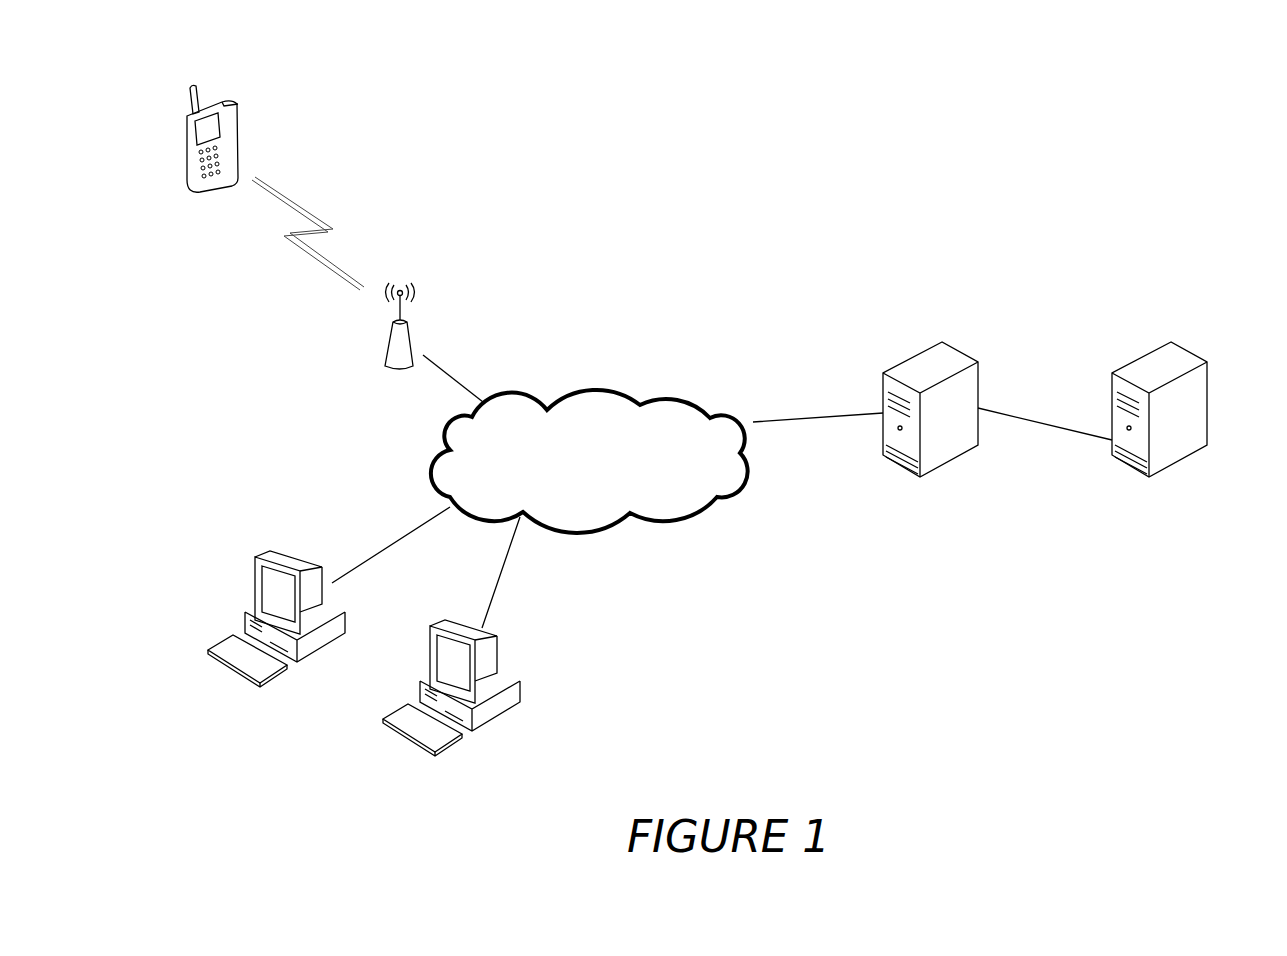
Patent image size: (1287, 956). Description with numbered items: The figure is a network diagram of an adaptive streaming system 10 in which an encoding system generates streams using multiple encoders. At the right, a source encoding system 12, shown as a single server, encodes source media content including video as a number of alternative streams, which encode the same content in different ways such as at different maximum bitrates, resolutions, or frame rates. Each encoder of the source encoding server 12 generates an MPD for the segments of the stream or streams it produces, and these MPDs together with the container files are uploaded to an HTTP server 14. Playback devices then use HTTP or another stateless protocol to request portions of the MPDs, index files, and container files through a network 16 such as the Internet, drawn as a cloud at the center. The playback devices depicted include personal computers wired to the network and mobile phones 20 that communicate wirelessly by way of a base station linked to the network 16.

The adaptive streaming system 10 is at (742, 222).
The source encoding system 12 is at (1178, 342).
The HTTP server 14 is at (948, 358).
The network 16 is at (628, 522).
The mobile phones 20 is at (228, 112).